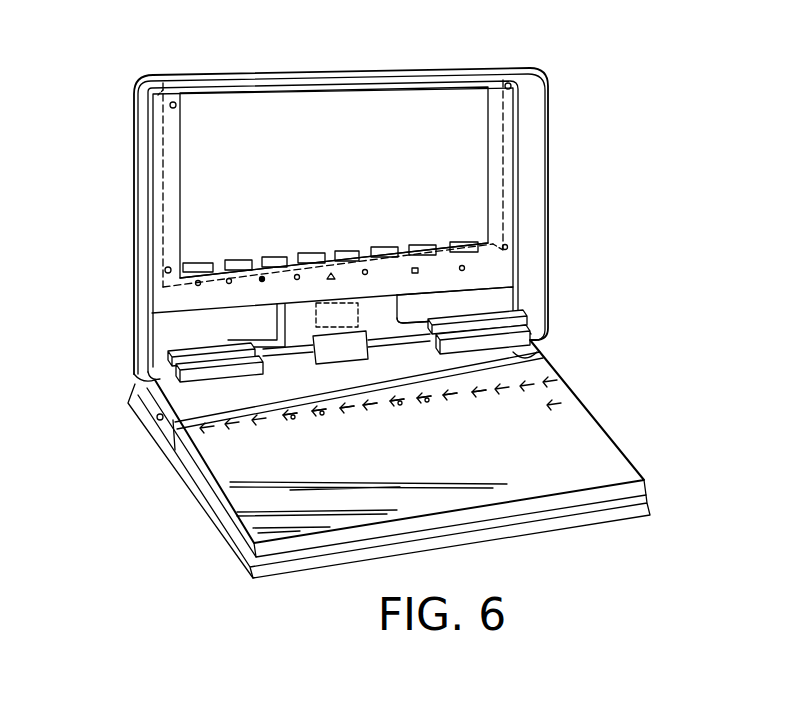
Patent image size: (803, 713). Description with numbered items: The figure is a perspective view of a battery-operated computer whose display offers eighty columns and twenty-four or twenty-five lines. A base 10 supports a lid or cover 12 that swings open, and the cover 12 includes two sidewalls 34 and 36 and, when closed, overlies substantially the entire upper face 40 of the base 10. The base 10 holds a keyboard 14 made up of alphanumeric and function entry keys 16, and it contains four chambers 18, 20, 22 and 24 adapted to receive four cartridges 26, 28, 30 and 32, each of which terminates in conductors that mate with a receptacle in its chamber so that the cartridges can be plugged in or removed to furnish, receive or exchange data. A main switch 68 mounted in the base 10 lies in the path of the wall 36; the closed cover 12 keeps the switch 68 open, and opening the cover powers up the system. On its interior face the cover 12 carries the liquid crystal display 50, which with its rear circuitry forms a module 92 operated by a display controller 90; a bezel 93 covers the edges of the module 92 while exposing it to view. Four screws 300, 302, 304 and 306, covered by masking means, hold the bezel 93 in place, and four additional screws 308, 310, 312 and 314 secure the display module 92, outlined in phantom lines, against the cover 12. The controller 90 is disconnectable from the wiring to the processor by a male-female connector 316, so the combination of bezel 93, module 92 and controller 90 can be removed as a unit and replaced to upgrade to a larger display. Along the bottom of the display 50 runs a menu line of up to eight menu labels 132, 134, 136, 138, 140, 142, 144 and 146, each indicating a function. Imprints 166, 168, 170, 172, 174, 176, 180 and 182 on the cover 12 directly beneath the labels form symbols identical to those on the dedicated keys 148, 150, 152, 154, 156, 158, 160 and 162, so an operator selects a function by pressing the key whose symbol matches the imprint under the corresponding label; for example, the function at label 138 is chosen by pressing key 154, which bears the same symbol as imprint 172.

The base 10 is at (622, 428).
The lid or cover 12 is at (556, 224).
The keyboard 14 is at (562, 403).
The entry keys 16 is at (545, 380).
The chamber 18 is at (226, 380).
The chamber 20 is at (153, 367).
The chamber 22 is at (531, 342).
The chamber 24 is at (427, 340).
The cartridge 26 is at (262, 374).
The cartridge 28 is at (202, 355).
The cartridge 30 is at (457, 356).
The cartridge 32 is at (500, 320).
The sidewall 34 is at (535, 280).
The sidewall 36 is at (140, 174).
The upper face 40 is at (540, 363).
The liquid crystal display 50 is at (475, 175).
The main switch 68 is at (157, 418).
The display controller 90 is at (272, 325).
The display module 92 is at (442, 93).
The bezel 93 is at (495, 145).
The menu label 132 is at (192, 265).
The menu label 134 is at (238, 265).
The menu label 136 is at (277, 263).
The menu label 138 is at (312, 262).
The menu label 140 is at (336, 252).
The menu label 142 is at (385, 247).
The menu label 144 is at (420, 245).
The menu label 146 is at (455, 244).
The dedicated key 148 is at (303, 427).
The dedicated key 150 is at (322, 420).
The dedicated key 152 is at (350, 416).
The dedicated key 154 is at (375, 412).
The dedicated key 156 is at (393, 408).
The dedicated key 158 is at (427, 404).
The dedicated key 160 is at (455, 400).
The dedicated key 162 is at (485, 397).
The imprint 166 is at (197, 286).
The imprint 168 is at (229, 284).
The imprint 170 is at (262, 282).
The imprint 172 is at (297, 280).
The imprint 174 is at (331, 281).
The imprint 176 is at (365, 275).
The imprint 180 is at (415, 274).
The imprint 182 is at (462, 271).
The bezel screw 300 is at (170, 77).
The bezel screw 302 is at (513, 75).
The bezel screw 304 is at (163, 290).
The bezel screw 306 is at (513, 255).
The module screw 308 is at (176, 103).
The module screw 310 is at (511, 88).
The module screw 312 is at (165, 270).
The module screw 314 is at (508, 245).
The male-female connector 316 is at (358, 316).